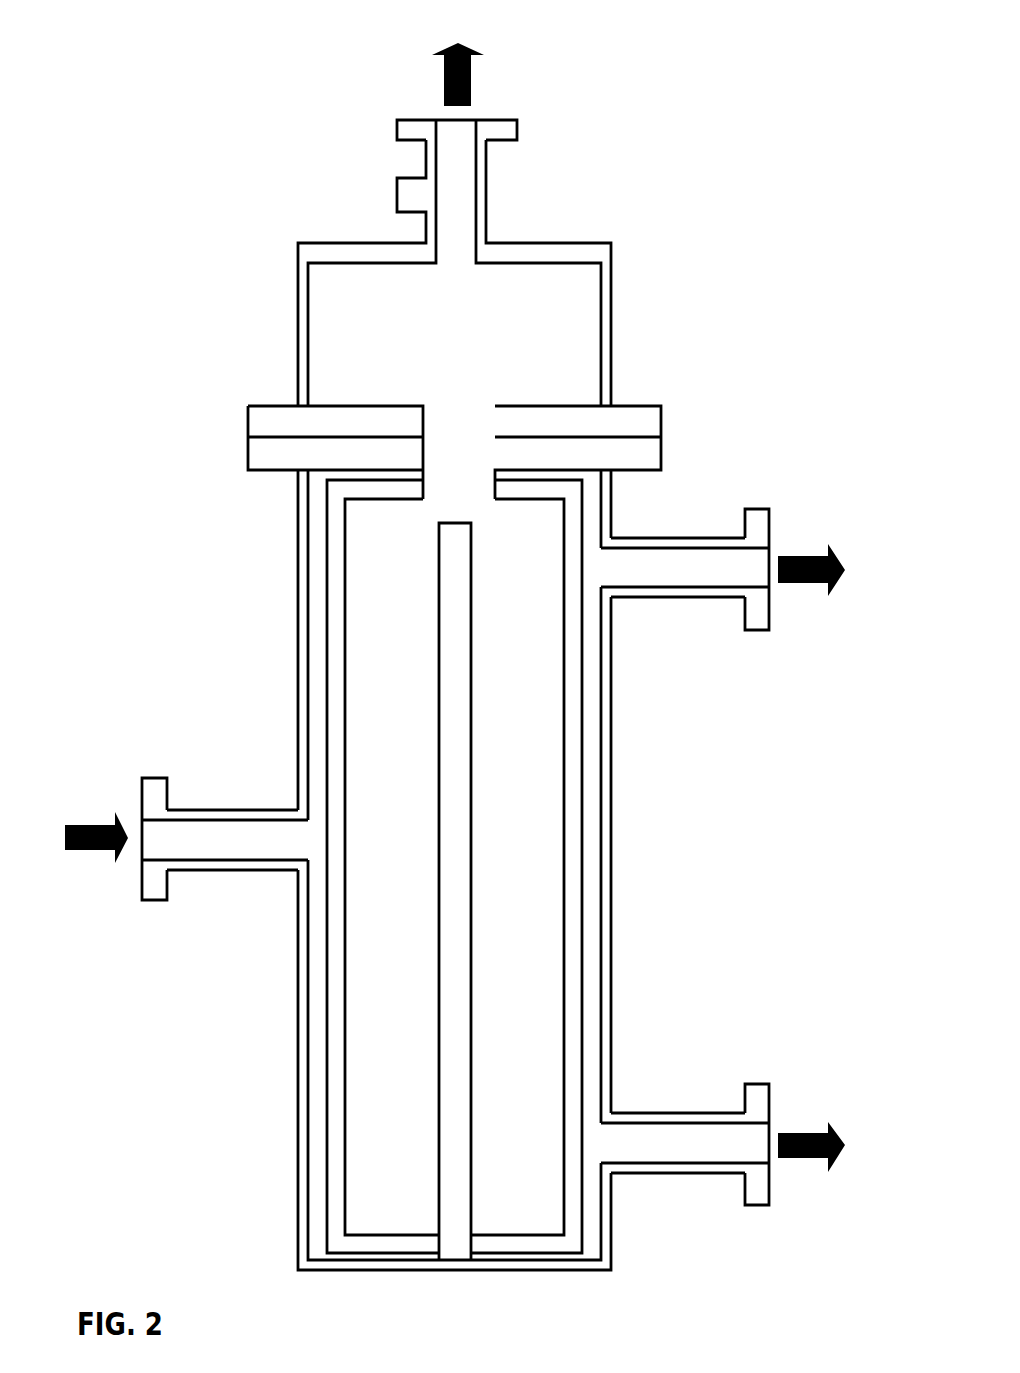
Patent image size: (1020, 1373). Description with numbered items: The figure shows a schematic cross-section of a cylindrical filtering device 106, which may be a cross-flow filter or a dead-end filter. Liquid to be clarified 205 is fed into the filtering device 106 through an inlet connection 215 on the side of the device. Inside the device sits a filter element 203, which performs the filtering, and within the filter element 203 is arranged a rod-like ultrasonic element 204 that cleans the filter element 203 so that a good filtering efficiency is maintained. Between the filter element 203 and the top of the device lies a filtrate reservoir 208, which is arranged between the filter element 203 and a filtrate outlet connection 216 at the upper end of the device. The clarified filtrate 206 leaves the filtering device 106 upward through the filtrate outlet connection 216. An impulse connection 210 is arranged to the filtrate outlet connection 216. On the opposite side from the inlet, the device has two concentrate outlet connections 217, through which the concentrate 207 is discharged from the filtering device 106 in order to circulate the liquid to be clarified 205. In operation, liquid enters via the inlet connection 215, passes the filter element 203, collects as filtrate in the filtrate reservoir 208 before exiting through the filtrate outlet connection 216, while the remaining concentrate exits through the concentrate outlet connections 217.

The filtering device 106 is at (245, 60).
The filter element 203 is at (327, 577).
The ultrasonic element 204 is at (439, 635).
The liquid to be clarified 205 is at (66, 837).
The clarified filtrate 206 is at (458, 55).
The concentrate 207 is at (849, 858).
The filtrate reservoir 208 is at (298, 328).
The impulse connection 210 is at (397, 190).
The inlet connection 215 is at (142, 800).
The filtrate outlet connection 216 is at (410, 120).
The concentrate outlet connection 217 is at (770, 530).